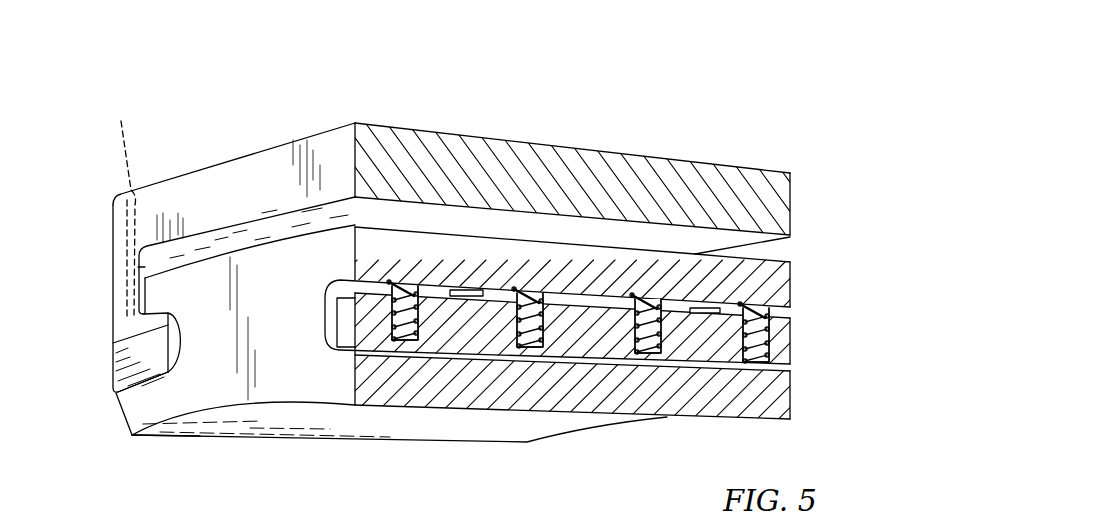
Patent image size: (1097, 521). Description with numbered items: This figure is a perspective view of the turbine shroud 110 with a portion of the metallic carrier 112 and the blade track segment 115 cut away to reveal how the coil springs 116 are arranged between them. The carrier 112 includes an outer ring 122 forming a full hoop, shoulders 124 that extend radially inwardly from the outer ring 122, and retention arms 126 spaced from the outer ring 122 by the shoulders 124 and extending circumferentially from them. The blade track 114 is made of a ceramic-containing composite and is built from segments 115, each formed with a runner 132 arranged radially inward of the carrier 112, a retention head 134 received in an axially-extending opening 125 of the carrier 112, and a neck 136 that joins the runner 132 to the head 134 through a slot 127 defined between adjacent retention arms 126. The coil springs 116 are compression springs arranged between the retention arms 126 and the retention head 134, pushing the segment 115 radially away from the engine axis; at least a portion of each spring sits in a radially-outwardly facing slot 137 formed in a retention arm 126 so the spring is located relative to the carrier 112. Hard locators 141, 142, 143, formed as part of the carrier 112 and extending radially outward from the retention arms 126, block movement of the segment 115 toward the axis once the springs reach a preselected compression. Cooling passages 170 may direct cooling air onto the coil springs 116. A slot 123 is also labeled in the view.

The turbine shroud 110 is at (712, 128).
The carrier 112 is at (506, 134).
The blade track 114 is at (306, 444).
The blade track segment 115 is at (347, 433).
The coil springs 116 is at (388, 323).
The outer ring 122 is at (277, 175).
The slot 123 is at (140, 335).
The shoulders 124 is at (113, 230).
The axially-extending opening 125 is at (223, 242).
The retention arms 126 is at (135, 366).
The slot 127 is at (170, 355).
The runner 132 is at (134, 418).
The retention head 134 is at (167, 288).
The neck 136 is at (210, 342).
The slot 137 is at (415, 342).
The hard locator 141 is at (497, 297).
The hard locator 142 is at (745, 310).
The hard locator 143 is at (172, 320).
The cooling passages 170 is at (274, 308).